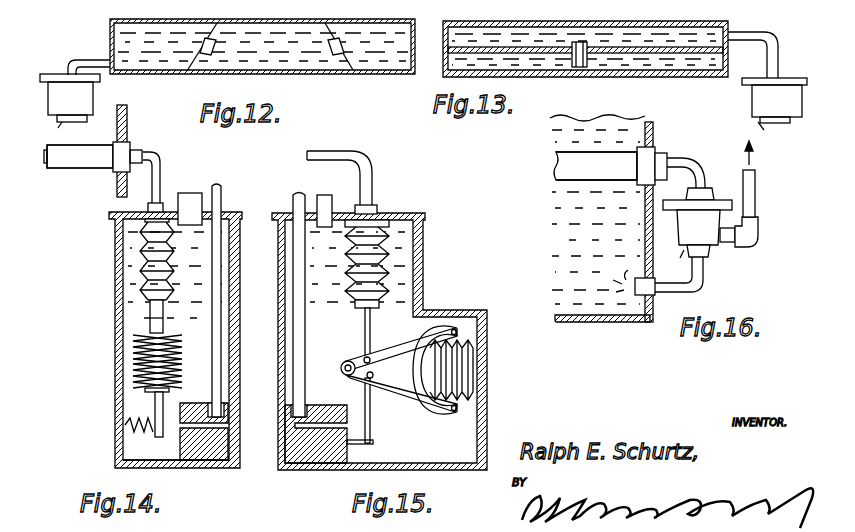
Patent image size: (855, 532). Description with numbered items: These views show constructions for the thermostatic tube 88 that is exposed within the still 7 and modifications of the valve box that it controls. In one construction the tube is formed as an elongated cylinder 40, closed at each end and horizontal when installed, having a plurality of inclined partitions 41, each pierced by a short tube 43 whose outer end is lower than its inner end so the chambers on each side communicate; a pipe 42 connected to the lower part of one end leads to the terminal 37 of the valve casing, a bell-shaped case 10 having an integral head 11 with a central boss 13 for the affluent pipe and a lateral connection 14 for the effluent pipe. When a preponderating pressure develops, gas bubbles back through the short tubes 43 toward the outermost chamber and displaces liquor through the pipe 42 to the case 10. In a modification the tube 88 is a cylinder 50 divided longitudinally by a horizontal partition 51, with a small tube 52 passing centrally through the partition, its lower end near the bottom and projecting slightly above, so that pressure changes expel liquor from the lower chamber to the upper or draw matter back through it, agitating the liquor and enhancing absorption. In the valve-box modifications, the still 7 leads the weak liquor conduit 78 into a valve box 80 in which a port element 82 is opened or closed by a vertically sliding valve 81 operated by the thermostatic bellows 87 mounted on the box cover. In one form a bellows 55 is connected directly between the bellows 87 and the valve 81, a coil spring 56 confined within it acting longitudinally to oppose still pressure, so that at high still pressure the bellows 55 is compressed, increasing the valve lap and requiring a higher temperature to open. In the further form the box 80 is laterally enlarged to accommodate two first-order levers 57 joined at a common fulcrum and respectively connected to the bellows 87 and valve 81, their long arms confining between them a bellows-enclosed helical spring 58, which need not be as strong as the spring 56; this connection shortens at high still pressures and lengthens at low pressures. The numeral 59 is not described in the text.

In FIG. 14, the still 7 is at (128, 121).
In FIG. 16, the still 7 is at (658, 129).
In FIG. 12, the bell-shaped case 10 is at (86, 106).
In FIG. 13, the bell-shaped case 10 is at (792, 110).
In FIG. 16, the bell-shaped case 10 is at (708, 234).
In FIG. 12, the integral head 11 is at (57, 120).
In FIG. 13, the integral head 11 is at (755, 122).
In FIG. 16, the integral head 11 is at (683, 250).
In FIG. 16, the boss 13 is at (706, 260).
In FIG. 16, the lateral connection 14 is at (755, 190).
In FIG. 16, the terminal of the valve casing 37 is at (702, 183).
In FIG. 12, the elongated cylinder 40 is at (290, 22).
In FIG. 14, the elongated cylinder 40 is at (99, 168).
In FIG. 16, the elongated cylinder 40 is at (606, 172).
In FIG. 12, the partitions 41 is at (209, 23).
In FIG. 12, the pipe 42 is at (86, 59).
In FIG. 12, the short tube 43 is at (200, 56).
In FIG. 13, the cylinder 50 is at (650, 22).
In FIG. 13, the longitudinal division 51 is at (708, 47).
In FIG. 13, the small tube 52 is at (580, 42).
In FIG. 14, the bellows 55 is at (135, 344).
In FIG. 14, the coil spring 56 is at (135, 356).
In FIG. 15, the levers 57 is at (410, 395).
In FIG. 15, the bellows-enclosed helical spring 58 is at (473, 342).
In FIG. 15, the bow spring 59 is at (473, 360).
In FIG. 14, the weak liquor conduit 78 is at (212, 188).
In FIG. 15, the weak liquor conduit 78 is at (323, 196).
In FIG. 14, the valve box 80 is at (116, 268).
In FIG. 15, the valve box 80 is at (379, 341).
In FIG. 14, the vertically sliding valve 81 is at (170, 427).
In FIG. 15, the vertically sliding valve 81 is at (364, 438).
In FIG. 14, the port element 82 is at (236, 464).
In FIG. 15, the port element 82 is at (313, 455).
In FIG. 14, the thermostatic bellows 87 is at (140, 240).
In FIG. 15, the thermostatic bellows 87 is at (390, 255).
In FIG. 14, the thermostatic tube 88 is at (78, 168).
In FIG. 16, the thermostatic tube 88 is at (582, 166).